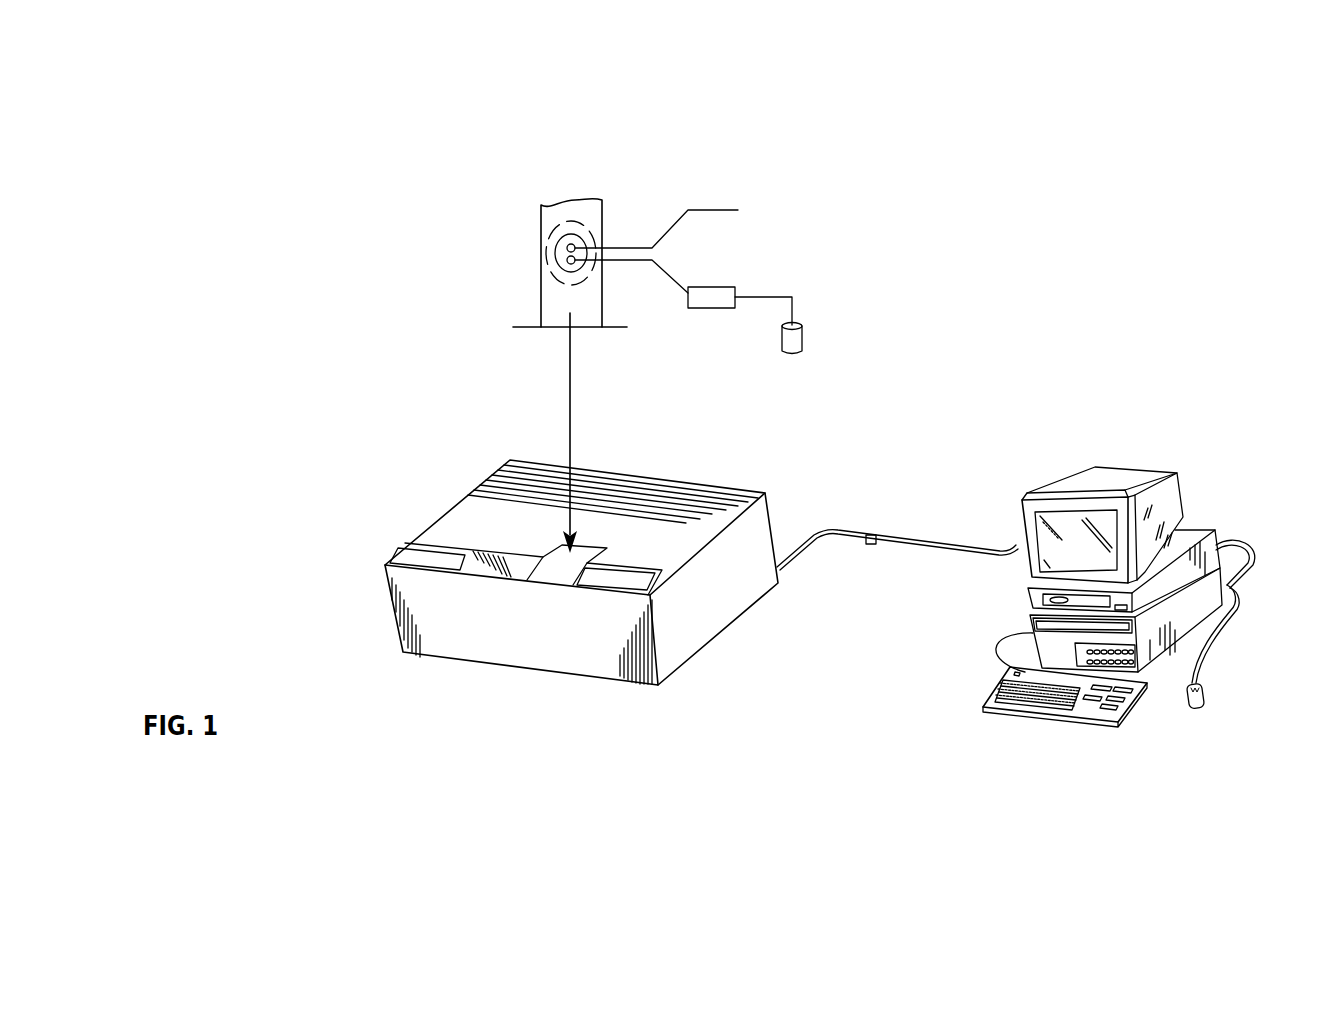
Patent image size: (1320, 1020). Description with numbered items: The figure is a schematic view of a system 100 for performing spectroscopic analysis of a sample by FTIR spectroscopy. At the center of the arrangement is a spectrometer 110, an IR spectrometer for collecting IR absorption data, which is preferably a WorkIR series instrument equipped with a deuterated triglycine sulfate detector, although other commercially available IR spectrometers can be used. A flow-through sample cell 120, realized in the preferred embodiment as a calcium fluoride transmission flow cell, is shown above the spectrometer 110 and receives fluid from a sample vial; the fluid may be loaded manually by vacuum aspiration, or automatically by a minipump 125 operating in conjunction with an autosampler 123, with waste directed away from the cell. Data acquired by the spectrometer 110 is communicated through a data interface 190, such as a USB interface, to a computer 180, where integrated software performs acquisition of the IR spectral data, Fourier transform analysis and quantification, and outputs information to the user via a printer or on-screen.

The system 100 is at (828, 128).
The spectrometer 110 is at (593, 650).
The flow-through sample cell 120 is at (550, 220).
The autosampler 123 is at (797, 343).
The minipump 125 is at (722, 297).
The computer 180 is at (1027, 492).
The data interface 190 is at (926, 530).